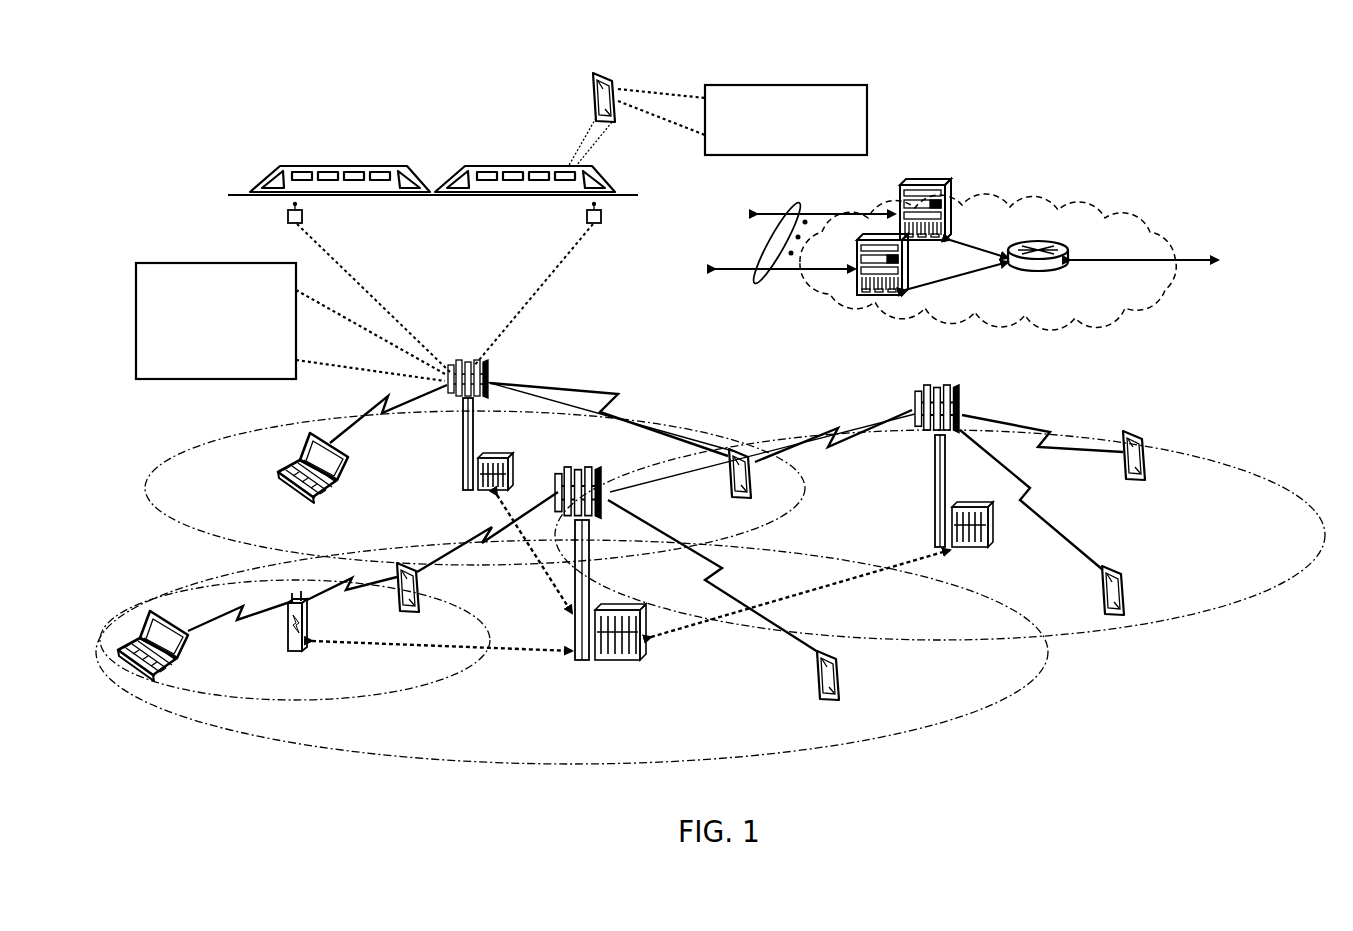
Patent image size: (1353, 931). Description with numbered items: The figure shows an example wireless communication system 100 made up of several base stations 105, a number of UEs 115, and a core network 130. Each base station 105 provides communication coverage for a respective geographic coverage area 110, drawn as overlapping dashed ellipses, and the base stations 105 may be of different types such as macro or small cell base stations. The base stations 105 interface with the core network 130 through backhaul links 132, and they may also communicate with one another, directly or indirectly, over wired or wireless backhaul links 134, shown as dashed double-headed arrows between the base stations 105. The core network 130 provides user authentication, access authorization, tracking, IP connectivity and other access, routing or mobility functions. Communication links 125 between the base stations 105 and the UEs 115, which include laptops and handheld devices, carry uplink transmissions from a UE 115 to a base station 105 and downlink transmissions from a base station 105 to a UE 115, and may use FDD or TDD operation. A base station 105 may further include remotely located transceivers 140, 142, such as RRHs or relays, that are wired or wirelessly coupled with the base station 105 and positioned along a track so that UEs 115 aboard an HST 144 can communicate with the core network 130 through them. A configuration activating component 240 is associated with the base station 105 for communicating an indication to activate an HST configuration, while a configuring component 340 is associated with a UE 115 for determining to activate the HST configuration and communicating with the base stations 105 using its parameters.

The wireless communication system 100 is at (1238, 100).
The base station 105 is at (461, 466).
The geographic coverage area 110 is at (194, 542).
The UE 115 is at (614, 116).
The communication link 125 is at (396, 420).
The core network 130 is at (1070, 310).
The backhaul link 132 is at (768, 273).
The backhaul link 134 is at (547, 573).
The remotely located transceiver 140 is at (602, 216).
The remotely located transceiver 142 is at (304, 216).
The HST 144 is at (486, 154).
The configuration activating component 240 is at (204, 263).
The configuring component 340 is at (790, 85).